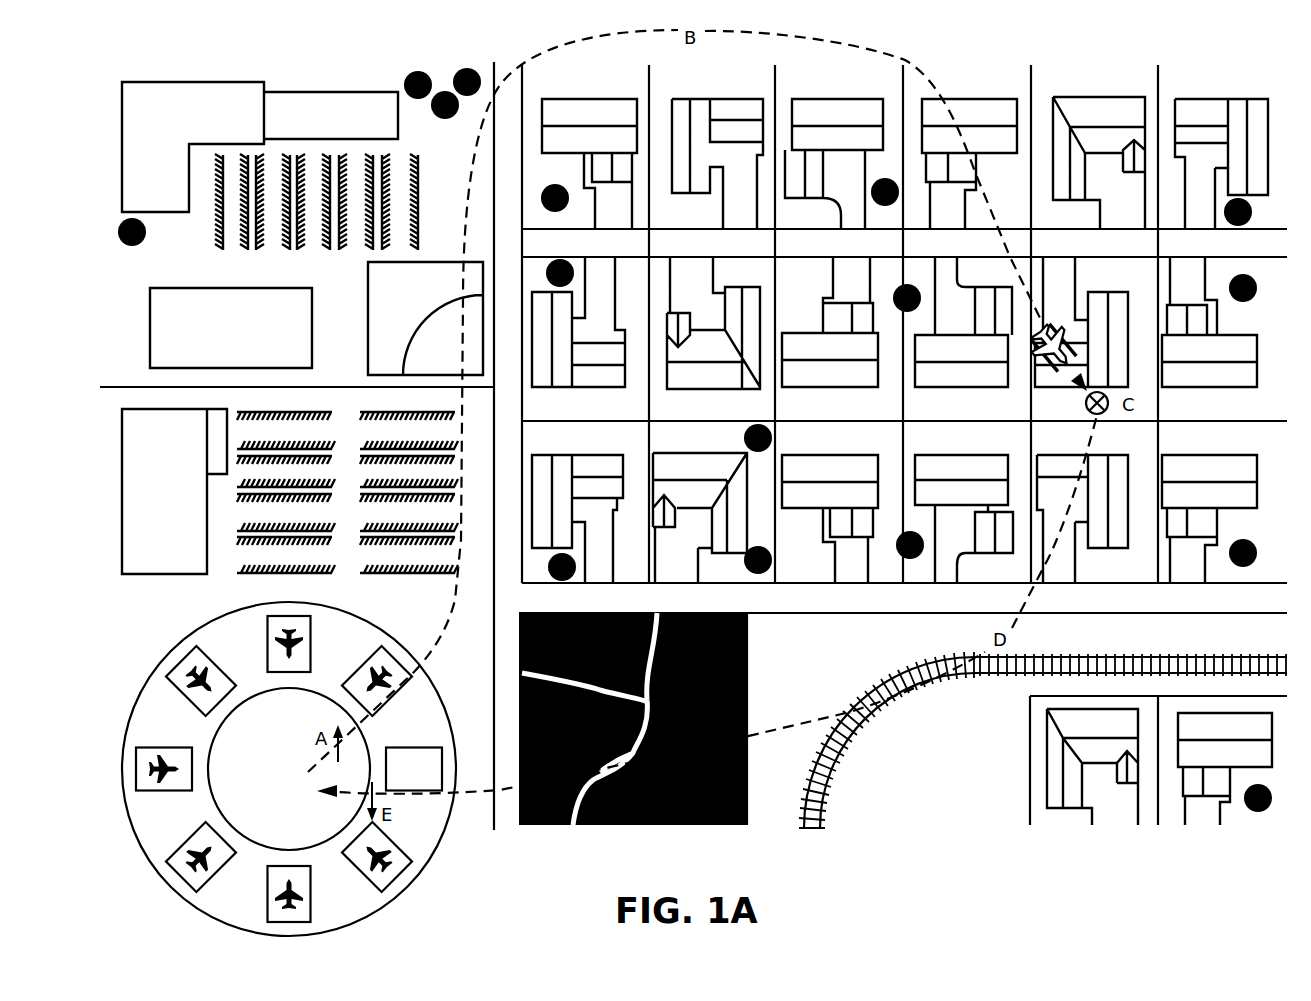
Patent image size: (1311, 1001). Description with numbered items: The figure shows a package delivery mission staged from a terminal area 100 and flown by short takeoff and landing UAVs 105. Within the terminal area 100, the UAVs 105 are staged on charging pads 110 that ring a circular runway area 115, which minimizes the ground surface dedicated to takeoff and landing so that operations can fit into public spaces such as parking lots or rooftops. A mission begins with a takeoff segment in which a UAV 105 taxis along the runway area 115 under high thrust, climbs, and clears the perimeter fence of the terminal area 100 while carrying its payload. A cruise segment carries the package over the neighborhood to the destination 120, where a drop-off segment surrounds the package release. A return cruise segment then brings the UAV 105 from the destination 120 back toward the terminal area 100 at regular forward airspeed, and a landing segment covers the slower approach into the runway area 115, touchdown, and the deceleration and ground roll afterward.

The terminal area 100 is at (452, 891).
The UAV 105 is at (154, 770).
The charging pad 110 is at (172, 676).
The runway area 115 is at (302, 780).
The destination 120 is at (1085, 404).